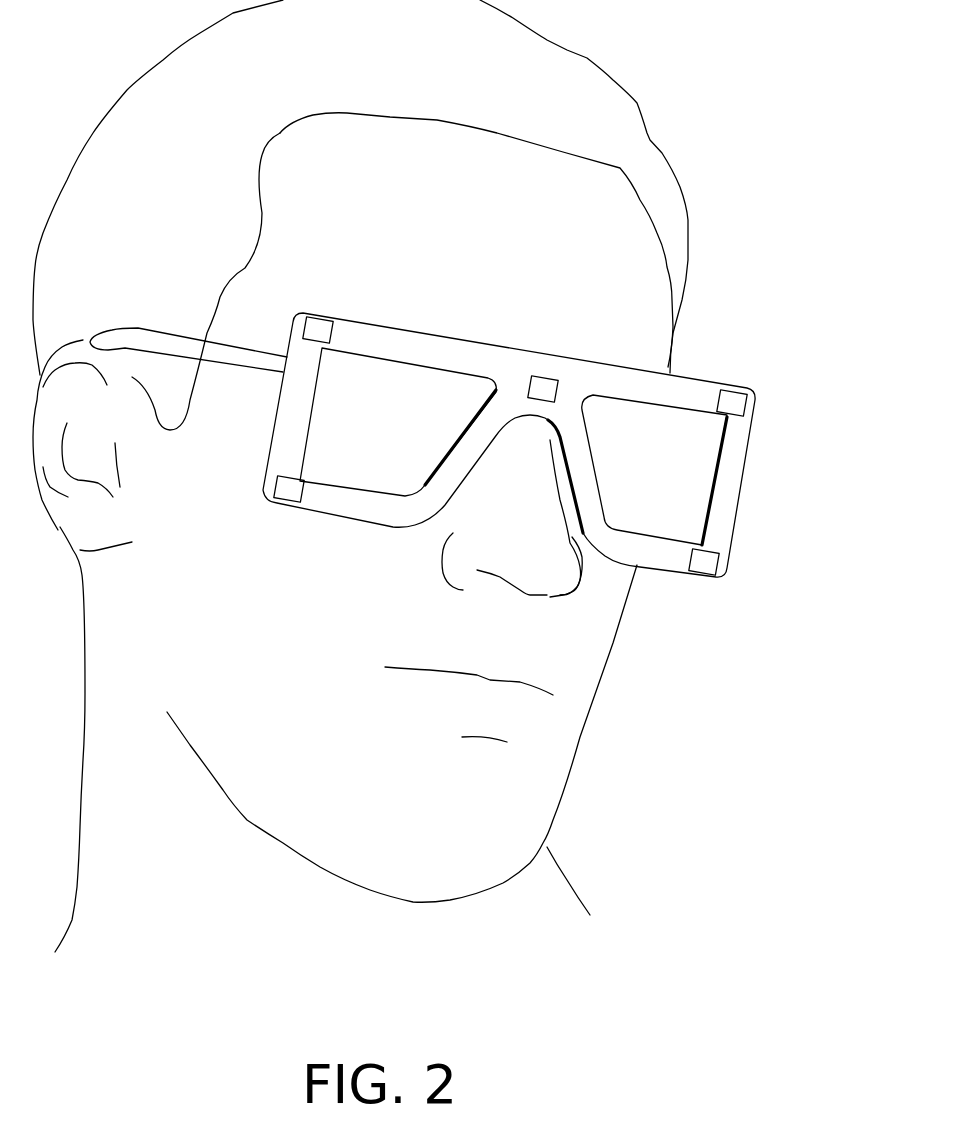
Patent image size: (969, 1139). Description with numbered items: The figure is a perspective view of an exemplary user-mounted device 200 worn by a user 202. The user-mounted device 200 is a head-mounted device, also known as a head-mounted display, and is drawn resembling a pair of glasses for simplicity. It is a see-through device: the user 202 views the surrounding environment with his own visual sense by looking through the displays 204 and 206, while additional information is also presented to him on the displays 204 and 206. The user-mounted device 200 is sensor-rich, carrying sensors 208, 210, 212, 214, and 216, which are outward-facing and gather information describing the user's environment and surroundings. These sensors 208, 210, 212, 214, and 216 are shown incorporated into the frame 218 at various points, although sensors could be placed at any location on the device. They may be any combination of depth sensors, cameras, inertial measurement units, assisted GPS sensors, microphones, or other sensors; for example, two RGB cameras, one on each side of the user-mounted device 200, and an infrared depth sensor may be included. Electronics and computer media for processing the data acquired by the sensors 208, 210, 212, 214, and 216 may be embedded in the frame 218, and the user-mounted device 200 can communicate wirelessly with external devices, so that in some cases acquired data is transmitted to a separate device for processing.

The user-mounted device 200 is at (478, 442).
The user 202 is at (548, 60).
The display 204 is at (360, 460).
The display 206 is at (650, 517).
The sensor 208 is at (320, 327).
The sensor 210 is at (543, 383).
The sensor 212 is at (730, 400).
The sensor 214 is at (710, 563).
The sensor 216 is at (292, 497).
The frame 218 is at (473, 335).